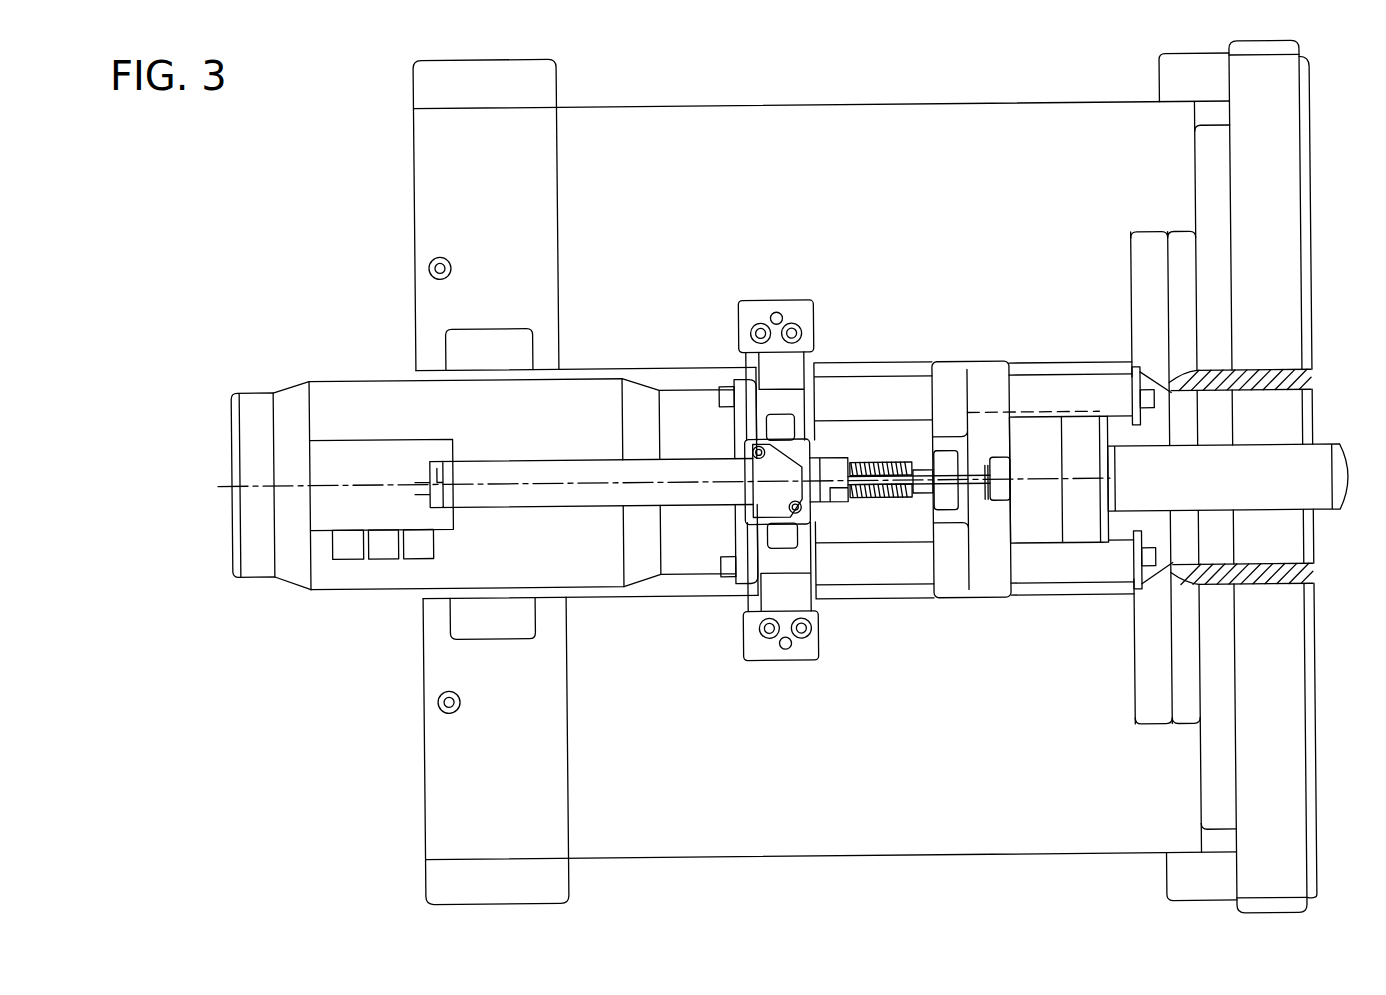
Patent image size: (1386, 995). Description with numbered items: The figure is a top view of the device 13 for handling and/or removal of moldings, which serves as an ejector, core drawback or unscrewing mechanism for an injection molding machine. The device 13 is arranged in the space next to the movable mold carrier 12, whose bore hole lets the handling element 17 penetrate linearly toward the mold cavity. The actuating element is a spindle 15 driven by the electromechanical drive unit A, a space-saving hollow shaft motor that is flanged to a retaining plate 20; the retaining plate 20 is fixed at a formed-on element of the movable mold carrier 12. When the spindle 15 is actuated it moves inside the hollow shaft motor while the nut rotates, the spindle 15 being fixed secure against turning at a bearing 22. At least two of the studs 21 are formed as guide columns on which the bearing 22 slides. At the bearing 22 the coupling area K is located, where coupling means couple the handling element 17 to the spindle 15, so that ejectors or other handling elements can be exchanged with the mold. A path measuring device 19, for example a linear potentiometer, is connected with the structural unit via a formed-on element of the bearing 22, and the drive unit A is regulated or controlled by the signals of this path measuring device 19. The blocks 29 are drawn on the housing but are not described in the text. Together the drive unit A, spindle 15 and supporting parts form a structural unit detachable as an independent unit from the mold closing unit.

The drive unit A is at (360, 417).
The movable mold carrier 12 is at (1252, 277).
The device for handling and/or removal of moldings 13 is at (869, 366).
The spindle 15 is at (880, 505).
The handling element 17 is at (1268, 466).
The path measuring device 19 is at (533, 475).
The retaining plate 20 is at (778, 370).
The studs 21 is at (1063, 395).
The bearing 22 is at (985, 382).
The bearing block 29 is at (500, 205).
The coupling area K is at (1083, 513).